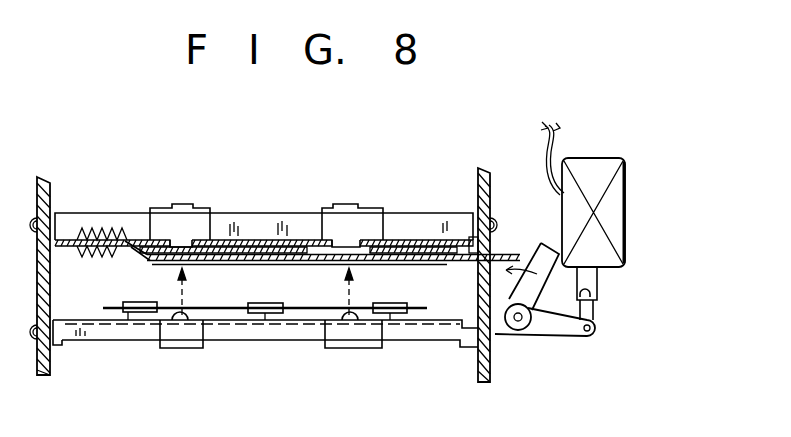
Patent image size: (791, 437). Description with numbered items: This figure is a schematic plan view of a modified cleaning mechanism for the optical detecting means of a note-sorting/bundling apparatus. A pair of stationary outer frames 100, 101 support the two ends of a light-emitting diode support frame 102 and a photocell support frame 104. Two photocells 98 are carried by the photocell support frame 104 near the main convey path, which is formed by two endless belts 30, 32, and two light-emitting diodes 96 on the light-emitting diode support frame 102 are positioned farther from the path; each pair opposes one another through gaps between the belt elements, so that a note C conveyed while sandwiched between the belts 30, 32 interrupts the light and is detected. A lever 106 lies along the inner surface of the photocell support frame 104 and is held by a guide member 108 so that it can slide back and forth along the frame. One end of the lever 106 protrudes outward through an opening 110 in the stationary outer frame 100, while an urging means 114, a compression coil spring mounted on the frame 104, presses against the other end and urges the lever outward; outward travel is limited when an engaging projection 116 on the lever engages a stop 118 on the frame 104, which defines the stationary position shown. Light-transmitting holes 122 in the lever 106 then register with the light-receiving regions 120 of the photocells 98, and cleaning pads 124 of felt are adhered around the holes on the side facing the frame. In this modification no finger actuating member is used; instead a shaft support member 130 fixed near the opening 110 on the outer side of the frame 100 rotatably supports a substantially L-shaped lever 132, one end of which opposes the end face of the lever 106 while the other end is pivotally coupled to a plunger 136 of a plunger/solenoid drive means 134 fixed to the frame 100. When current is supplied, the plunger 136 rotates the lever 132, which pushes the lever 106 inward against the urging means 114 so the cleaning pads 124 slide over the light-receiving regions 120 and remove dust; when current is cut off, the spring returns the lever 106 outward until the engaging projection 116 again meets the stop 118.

The stationary outer frame 101 is at (40, 178).
The stationary outer frame 100 is at (483, 168).
The photocell support frame 104 is at (253, 223).
The cleaning pads 124 is at (262, 222).
The urging means 114 is at (82, 224).
The stop 118 is at (143, 238).
The light-receiving regions 120 is at (188, 245).
The photocells 98 is at (180, 207).
The engaging projection 116 is at (130, 254).
The guide member 108 is at (417, 262).
The lever 106 is at (449, 265).
The opening 110 is at (494, 240).
The light-transmitting holes 122 is at (188, 266).
The note C is at (235, 306).
The endless belt 32 is at (133, 302).
The endless belt 30 is at (128, 312).
The light-emitting diode support frame 102 is at (77, 338).
The light-emitting diodes 96 is at (178, 348).
The plunger/solenoid drive means 134 is at (588, 178).
The plunger 136 is at (593, 280).
The L-shaped lever 132 is at (552, 337).
The shaft support member 130 is at (500, 332).